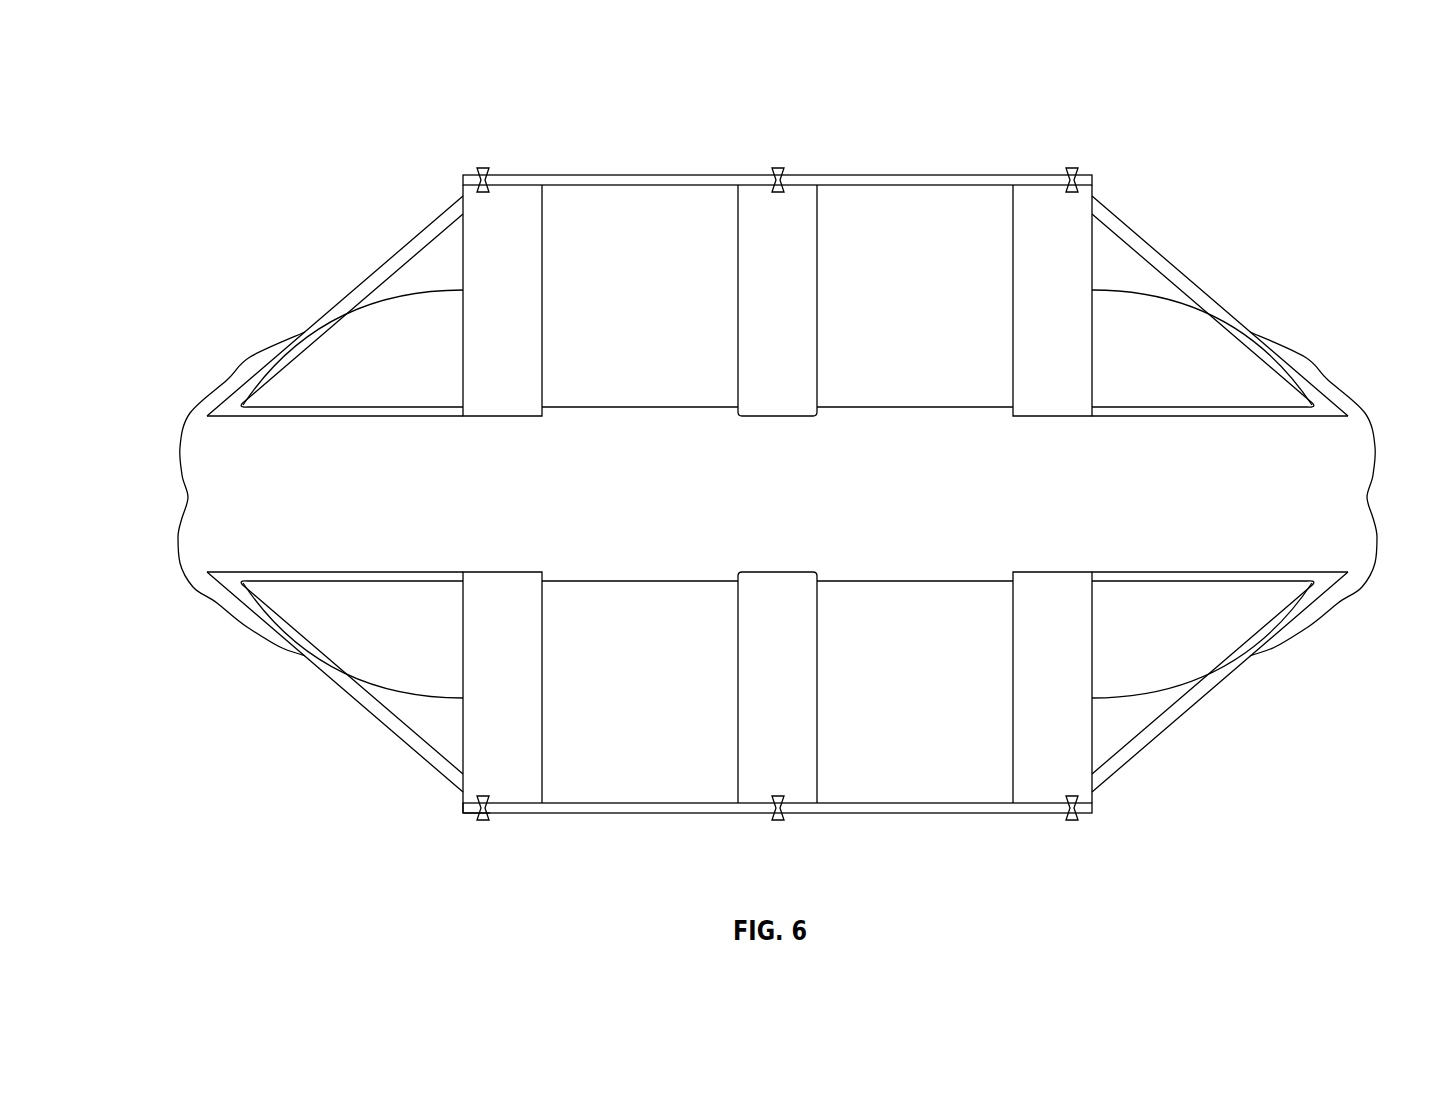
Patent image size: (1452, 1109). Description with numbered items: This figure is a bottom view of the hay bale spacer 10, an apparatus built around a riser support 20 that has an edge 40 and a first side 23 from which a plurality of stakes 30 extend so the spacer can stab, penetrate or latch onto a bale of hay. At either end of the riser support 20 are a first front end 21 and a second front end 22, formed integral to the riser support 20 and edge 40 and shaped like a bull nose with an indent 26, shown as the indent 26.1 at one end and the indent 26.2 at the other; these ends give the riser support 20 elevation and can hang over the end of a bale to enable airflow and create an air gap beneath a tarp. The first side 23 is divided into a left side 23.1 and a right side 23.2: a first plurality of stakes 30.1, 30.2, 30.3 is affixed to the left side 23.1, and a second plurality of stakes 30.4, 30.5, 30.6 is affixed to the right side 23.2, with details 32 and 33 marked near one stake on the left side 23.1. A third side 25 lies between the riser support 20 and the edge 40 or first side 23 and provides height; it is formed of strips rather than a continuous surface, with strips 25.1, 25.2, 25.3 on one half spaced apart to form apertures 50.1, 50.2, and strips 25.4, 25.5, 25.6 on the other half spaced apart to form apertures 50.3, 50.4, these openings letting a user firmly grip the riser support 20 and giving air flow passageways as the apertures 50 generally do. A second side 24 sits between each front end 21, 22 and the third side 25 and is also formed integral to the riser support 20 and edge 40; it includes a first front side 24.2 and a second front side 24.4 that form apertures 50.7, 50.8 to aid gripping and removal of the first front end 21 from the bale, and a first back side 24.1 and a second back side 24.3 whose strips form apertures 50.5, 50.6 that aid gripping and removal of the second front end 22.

The hay bale spacer 10 is at (787, 524).
The riser support 20 is at (787, 524).
The first front end 21 is at (1247, 485).
The second front end 22 is at (288, 472).
The first side 23 is at (825, 532).
The left side 23.1 is at (681, 809).
The right side 23.2 is at (1010, 178).
The second side 24 is at (759, 525).
The first back side 24.1 is at (375, 693).
The first front side 24.2 is at (1133, 717).
The second back side 24.3 is at (410, 277).
The second front side 24.4 is at (1158, 282).
The third side 25 is at (777, 494).
The strip 25.1 is at (508, 706).
The strip 25.2 is at (768, 630).
The strip 25.3 is at (1052, 652).
The strip 25.4 is at (513, 352).
The strip 25.5 is at (783, 373).
The strip 25.6 is at (1040, 332).
The indent 26 is at (776, 567).
The indent 26.1 is at (175, 498).
The indent 26.2 is at (1380, 488).
The stakes 30 is at (769, 514).
The stake 30.1 is at (481, 820).
The stake 30.2 is at (777, 820).
The stake 30.3 is at (1075, 820).
The stake 30.4 is at (480, 168).
The stake 30.5 is at (775, 168).
The stake 30.6 is at (1073, 168).
The corner portion 32 is at (490, 813).
The corner edge 33 is at (463, 813).
The edge 40 is at (917, 815).
The apertures 50 is at (770, 494).
The aperture 50.1 is at (687, 760).
The aperture 50.2 is at (928, 768).
The aperture 50.3 is at (632, 232).
The aperture 50.4 is at (937, 228).
The aperture 50.5 is at (398, 643).
The aperture 50.6 is at (390, 355).
The aperture 50.7 is at (1152, 645).
The aperture 50.8 is at (1173, 355).